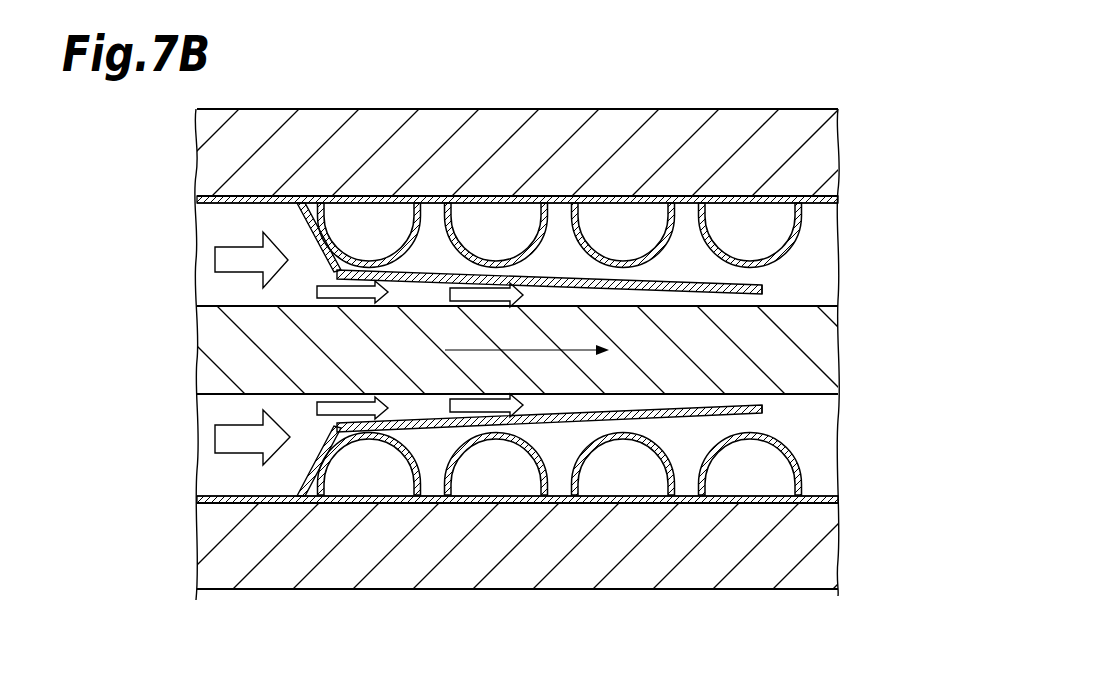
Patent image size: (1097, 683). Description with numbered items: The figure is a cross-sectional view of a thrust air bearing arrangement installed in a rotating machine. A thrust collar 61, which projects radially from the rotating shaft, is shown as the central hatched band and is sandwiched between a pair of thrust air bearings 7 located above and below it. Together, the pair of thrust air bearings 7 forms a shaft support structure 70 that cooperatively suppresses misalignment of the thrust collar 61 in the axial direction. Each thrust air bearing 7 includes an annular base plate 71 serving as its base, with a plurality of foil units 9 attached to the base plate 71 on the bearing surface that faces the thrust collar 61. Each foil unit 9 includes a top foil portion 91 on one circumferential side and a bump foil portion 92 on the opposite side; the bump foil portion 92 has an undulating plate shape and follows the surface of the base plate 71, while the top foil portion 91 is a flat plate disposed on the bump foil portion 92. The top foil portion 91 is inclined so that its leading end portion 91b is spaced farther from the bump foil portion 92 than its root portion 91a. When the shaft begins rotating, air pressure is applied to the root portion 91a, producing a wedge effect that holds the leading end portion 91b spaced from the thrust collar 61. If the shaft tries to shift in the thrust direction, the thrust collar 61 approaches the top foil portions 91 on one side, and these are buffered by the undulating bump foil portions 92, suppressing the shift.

The thrust air bearing 7 is at (283, 108).
The shaft support structure 70 is at (787, 108).
The base plate 71 is at (406, 145).
The foil unit 9 is at (826, 193).
The thrust collar 61 is at (773, 354).
The top foil portion 91 is at (681, 283).
The root portion 91a is at (339, 276).
The leading end portion 91b is at (764, 291).
The bump foil portion 92 is at (600, 216).